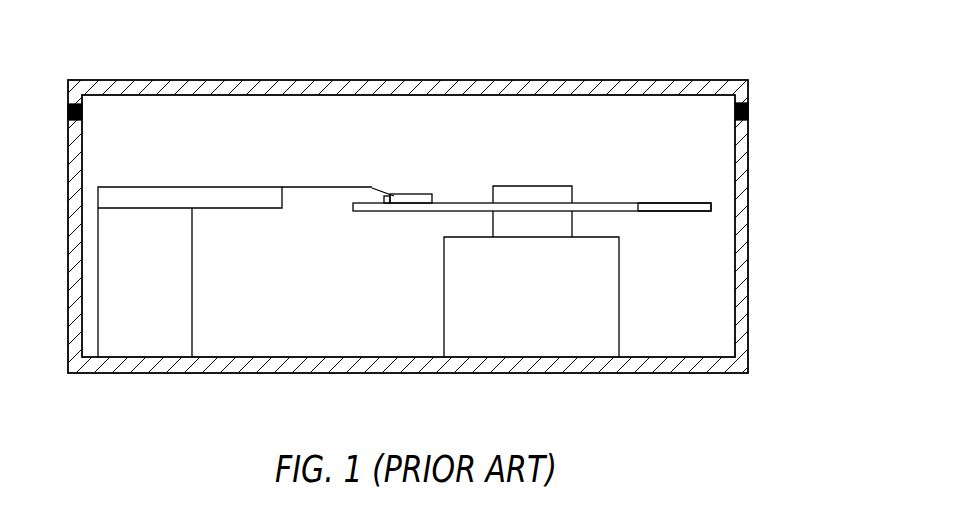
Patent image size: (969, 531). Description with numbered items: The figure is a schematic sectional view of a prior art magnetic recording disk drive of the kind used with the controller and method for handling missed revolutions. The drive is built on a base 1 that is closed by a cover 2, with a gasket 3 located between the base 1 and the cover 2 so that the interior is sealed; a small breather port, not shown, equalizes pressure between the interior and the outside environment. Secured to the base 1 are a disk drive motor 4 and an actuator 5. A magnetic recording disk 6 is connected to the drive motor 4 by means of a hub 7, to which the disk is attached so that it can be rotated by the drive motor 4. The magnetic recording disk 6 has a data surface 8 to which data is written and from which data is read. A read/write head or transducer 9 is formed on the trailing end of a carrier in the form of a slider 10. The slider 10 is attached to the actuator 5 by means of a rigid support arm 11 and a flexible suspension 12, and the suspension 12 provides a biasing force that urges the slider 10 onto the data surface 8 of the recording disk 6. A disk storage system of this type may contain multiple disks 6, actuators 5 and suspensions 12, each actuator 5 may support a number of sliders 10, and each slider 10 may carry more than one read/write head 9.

The base 1 is at (740, 305).
The cover 2 is at (92, 84).
The gasket 3 is at (749, 110).
The disk drive motor 4 is at (530, 345).
The actuator 5 is at (134, 345).
The magnetic recording disk 6 is at (713, 204).
The hub 7 is at (530, 186).
The data surface 8 is at (680, 202).
The read/write head 9 is at (372, 188).
The slider 10 is at (412, 194).
The rigid support arm 11 is at (180, 187).
The flexible suspension 12 is at (303, 187).